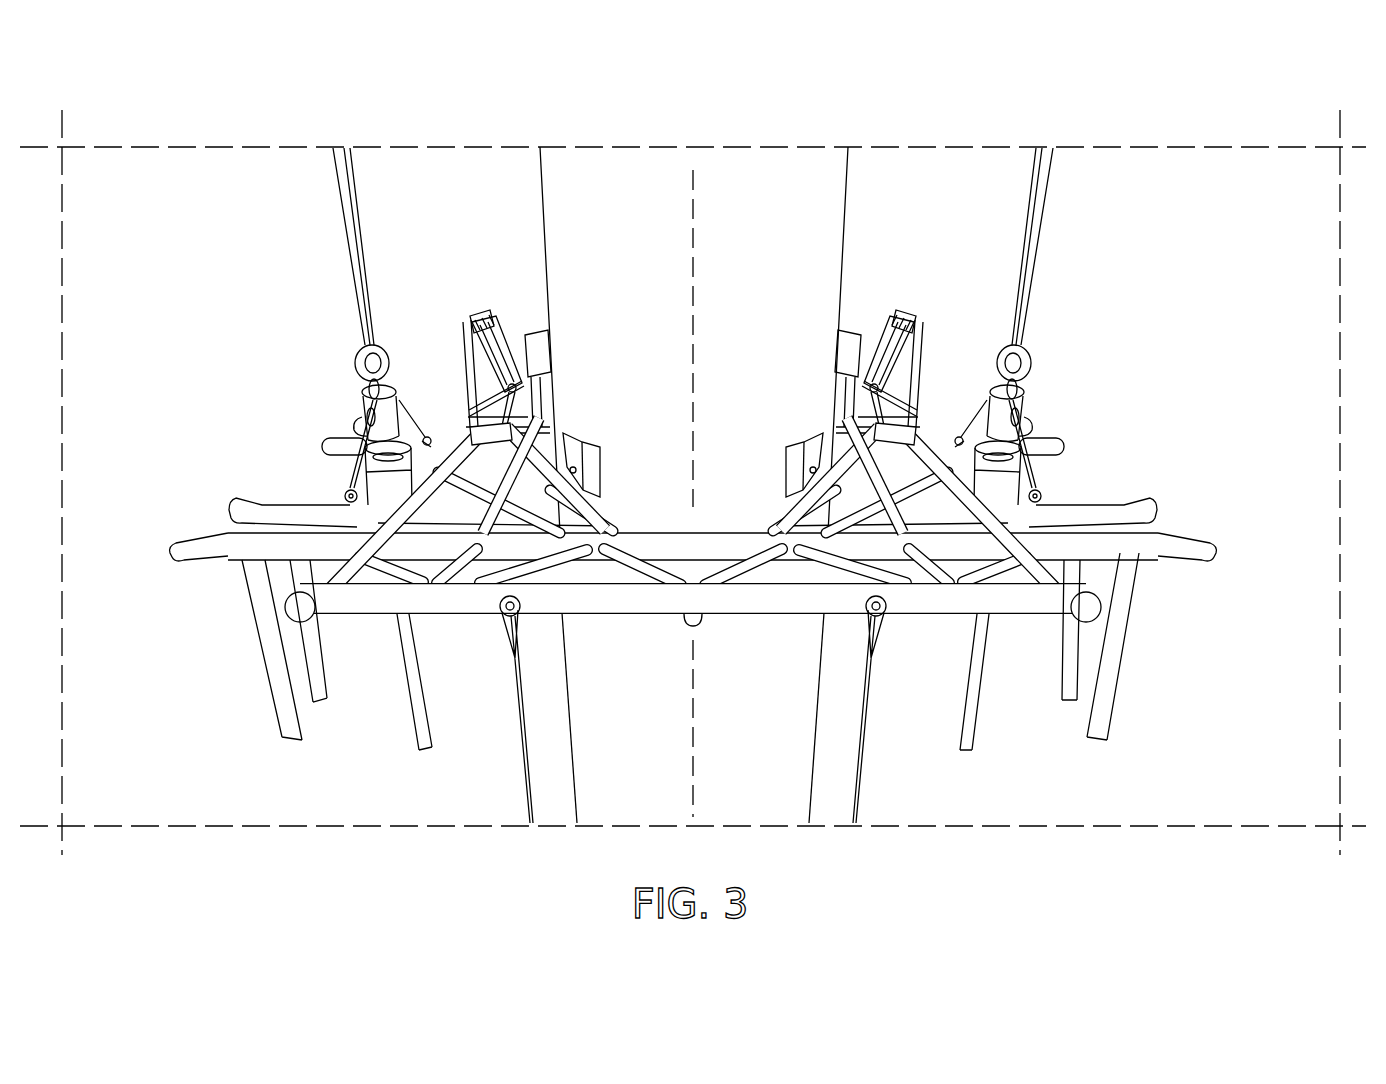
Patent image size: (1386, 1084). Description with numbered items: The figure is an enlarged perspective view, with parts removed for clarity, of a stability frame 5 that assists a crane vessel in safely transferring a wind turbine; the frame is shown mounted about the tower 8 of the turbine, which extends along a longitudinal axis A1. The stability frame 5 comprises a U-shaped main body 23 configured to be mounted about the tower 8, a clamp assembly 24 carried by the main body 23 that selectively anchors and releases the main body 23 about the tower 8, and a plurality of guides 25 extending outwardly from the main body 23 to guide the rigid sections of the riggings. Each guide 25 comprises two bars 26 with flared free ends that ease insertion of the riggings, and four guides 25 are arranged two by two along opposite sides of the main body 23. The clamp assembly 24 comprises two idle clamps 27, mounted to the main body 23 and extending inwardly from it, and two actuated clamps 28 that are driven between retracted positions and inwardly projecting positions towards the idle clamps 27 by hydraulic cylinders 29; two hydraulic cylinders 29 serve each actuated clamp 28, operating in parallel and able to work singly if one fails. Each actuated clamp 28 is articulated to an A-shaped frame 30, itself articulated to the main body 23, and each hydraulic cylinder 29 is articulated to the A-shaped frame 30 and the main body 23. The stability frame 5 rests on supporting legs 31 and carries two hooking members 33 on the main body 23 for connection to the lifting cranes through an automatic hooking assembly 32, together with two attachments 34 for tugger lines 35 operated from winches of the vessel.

The longitudinal axis A1 is at (692, 240).
The stability frame 5 is at (1192, 718).
The tower 8 is at (825, 207).
The U-shaped main body 23 is at (640, 614).
The clamp assembly 24 is at (960, 232).
The guides 25 is at (312, 421).
The bars 26 is at (348, 410).
The idle clamps 27 is at (599, 470).
The actuated clamps 28 is at (540, 333).
The hydraulic cylinder 29 is at (474, 317).
The A-shaped frame 30 is at (470, 400).
The supporting legs 31 is at (417, 738).
The automatic hooking assembly 32 is at (252, 344).
The hooking members 33 is at (370, 480).
The attachments 34 is at (503, 610).
The tugger lines 35 is at (523, 753).